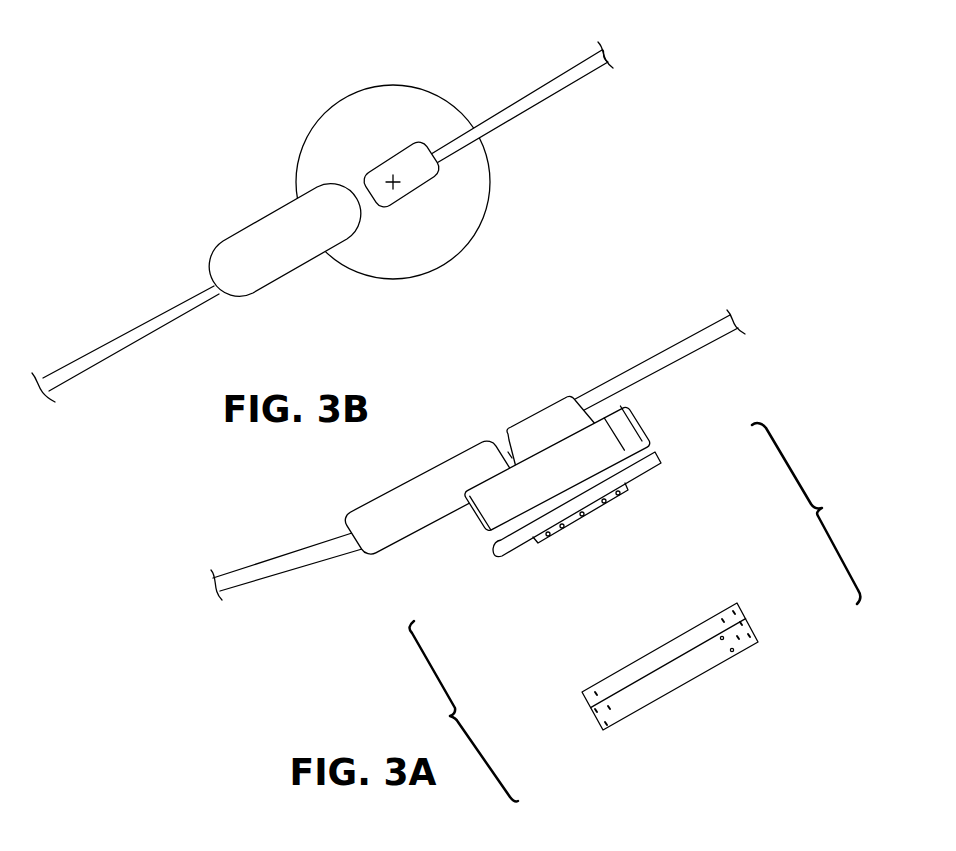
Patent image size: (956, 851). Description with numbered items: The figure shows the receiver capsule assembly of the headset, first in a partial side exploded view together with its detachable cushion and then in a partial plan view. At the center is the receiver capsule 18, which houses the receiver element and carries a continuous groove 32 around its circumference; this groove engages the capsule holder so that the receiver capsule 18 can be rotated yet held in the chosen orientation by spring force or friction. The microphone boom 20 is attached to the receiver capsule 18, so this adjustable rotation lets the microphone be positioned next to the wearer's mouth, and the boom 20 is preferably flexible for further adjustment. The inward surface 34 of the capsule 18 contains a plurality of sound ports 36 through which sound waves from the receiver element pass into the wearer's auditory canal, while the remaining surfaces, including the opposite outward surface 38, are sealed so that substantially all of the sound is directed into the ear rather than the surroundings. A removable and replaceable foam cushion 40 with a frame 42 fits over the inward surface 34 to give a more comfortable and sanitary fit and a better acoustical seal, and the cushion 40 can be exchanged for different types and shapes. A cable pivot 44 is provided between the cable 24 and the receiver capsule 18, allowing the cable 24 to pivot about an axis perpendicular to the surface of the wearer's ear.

In FIG. 3B, the receiver capsule 18 is at (488, 206).
In FIG. 3A, the receiver capsule 18 is at (642, 418).
In FIG. 3B, the microphone boom 20 is at (165, 310).
In FIG. 3A, the microphone boom 20 is at (253, 583).
In FIG. 3B, the cable 24 is at (563, 73).
In FIG. 3A, the cable 24 is at (700, 331).
In FIG. 3A, the continuous groove 32 is at (496, 535).
In FIG. 3A, the inward surface 34 is at (645, 470).
In FIG. 3A, the sound ports 36 is at (583, 524).
In FIG. 3B, the outward surface 38 is at (400, 244).
In FIG. 3A, the outward surface 38 is at (505, 447).
In FIG. 3A, the foam cushion 40 is at (663, 693).
In FIG. 3A, the frame 42 is at (648, 655).
In FIG. 3B, the cable pivot 44 is at (400, 143).
In FIG. 3A, the cable pivot 44 is at (530, 415).